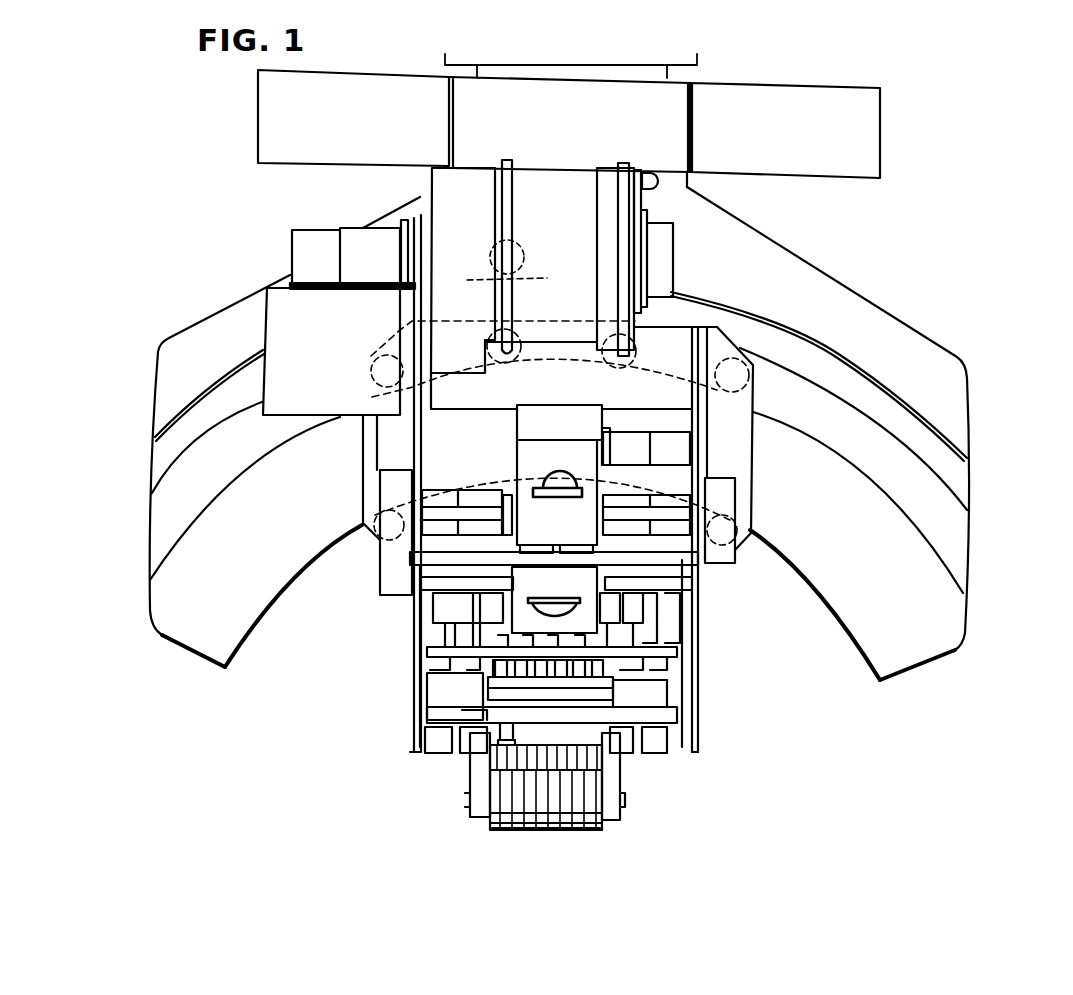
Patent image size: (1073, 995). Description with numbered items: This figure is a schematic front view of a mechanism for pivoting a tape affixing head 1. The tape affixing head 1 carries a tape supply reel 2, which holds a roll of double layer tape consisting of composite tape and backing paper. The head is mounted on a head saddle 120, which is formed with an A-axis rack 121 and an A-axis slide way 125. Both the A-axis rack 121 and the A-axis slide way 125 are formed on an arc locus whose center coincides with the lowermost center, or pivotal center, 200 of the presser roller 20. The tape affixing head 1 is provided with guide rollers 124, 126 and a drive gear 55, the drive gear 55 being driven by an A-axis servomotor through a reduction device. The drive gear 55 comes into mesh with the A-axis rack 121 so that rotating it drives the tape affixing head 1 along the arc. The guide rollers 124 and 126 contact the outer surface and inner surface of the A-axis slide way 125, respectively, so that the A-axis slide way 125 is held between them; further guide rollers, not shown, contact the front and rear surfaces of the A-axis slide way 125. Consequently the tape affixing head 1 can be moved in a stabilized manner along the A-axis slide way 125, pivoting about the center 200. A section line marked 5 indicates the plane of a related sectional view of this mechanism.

The tape affixing head 1 is at (700, 685).
The tape supply reel 2 is at (640, 203).
The section line of FIG. 5 is at (510, 160).
The presser roller 20 is at (598, 790).
The drive gear 55 is at (516, 243).
The head saddle 120 is at (794, 262).
The A-axis rack 121 is at (474, 276).
The guide roller 124 is at (375, 382).
The A-axis slide way 125 is at (186, 529).
The guide roller 126 is at (390, 540).
The lowermost center (pivotal center) 200 is at (545, 832).